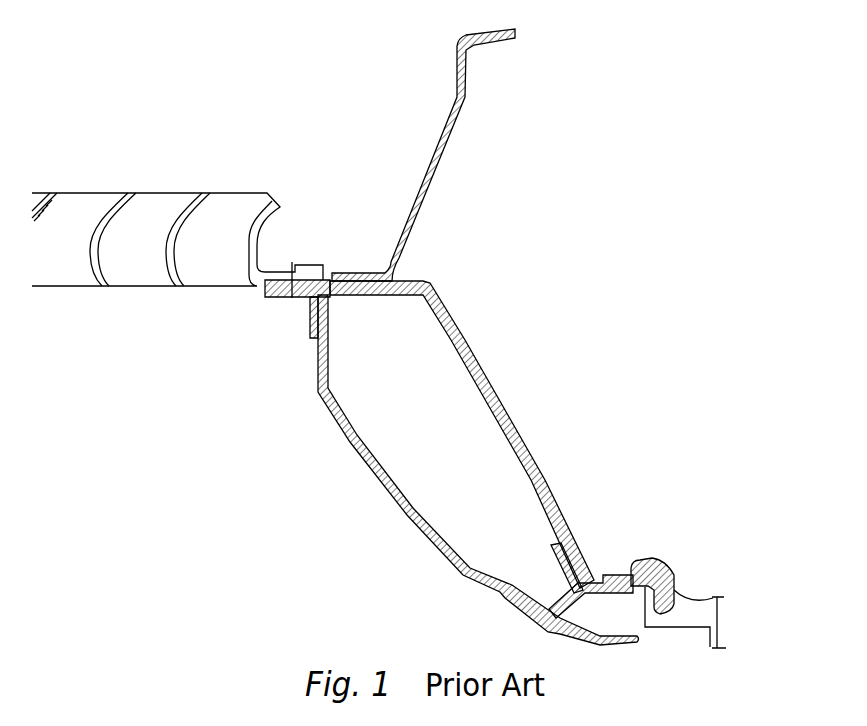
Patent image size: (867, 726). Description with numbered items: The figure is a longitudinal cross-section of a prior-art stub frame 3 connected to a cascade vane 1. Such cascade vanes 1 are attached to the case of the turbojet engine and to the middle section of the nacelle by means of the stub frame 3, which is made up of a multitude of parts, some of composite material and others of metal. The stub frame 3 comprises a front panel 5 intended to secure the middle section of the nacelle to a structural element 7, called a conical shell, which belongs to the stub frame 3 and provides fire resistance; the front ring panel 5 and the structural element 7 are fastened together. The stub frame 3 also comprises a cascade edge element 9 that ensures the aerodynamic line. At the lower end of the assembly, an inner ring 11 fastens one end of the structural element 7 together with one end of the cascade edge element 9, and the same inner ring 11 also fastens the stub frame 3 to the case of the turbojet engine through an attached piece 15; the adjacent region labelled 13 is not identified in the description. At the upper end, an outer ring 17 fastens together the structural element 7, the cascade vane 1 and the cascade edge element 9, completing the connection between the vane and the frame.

The cascade vane 1 is at (80, 213).
The stub frame 3 is at (382, 154).
The front panel 5 is at (463, 97).
The structural element 7 is at (470, 340).
The cascade edge element 9 is at (407, 520).
The inner ring 11 is at (576, 598).
The door 13 is at (702, 616).
The attached piece 15 is at (647, 558).
The outer ring 17 is at (299, 298).